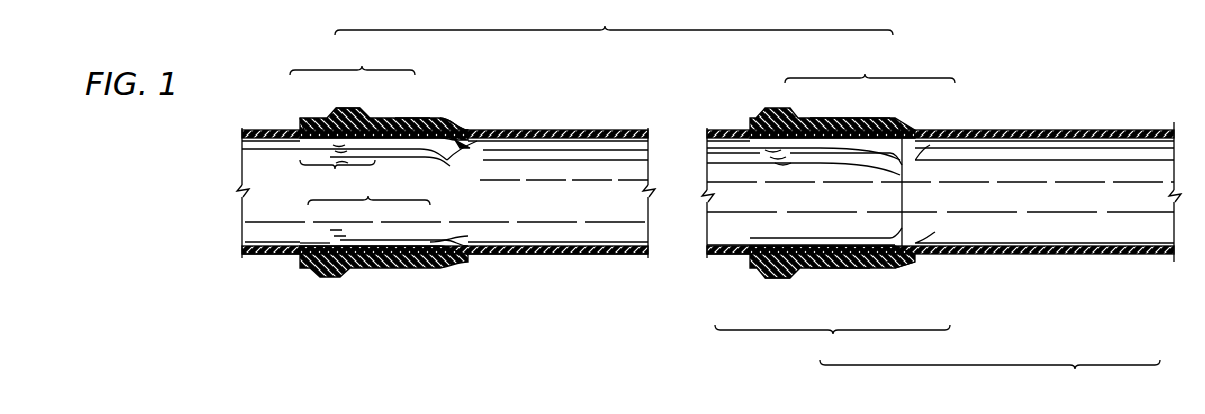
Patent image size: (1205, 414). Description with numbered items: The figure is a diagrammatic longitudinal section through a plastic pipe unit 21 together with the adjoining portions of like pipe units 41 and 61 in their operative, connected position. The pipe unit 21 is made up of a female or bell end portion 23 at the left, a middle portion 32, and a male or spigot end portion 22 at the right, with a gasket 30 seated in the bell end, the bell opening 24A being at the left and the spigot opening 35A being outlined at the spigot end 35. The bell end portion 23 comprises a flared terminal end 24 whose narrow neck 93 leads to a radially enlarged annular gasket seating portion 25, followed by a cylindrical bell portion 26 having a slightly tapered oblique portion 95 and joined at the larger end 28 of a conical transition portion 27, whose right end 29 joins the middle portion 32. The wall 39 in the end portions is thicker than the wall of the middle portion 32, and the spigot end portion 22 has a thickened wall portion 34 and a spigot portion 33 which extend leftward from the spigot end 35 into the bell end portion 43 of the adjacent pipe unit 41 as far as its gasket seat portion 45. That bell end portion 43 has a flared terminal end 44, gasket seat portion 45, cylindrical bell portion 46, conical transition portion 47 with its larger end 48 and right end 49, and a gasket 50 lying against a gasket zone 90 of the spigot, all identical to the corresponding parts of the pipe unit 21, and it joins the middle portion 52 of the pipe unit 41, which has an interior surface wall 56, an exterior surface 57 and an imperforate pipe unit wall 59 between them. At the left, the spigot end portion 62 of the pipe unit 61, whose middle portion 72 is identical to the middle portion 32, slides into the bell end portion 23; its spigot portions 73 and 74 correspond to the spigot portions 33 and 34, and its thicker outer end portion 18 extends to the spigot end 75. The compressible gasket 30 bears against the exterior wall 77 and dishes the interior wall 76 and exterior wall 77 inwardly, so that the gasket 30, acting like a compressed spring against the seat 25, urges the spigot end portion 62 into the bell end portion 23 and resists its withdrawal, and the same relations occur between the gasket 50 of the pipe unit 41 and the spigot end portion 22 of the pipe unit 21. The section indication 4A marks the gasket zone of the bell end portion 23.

The pipe unit 21 is at (614, 21).
The spigot end portion 22 is at (870, 69).
The bell end portion 23 is at (352, 61).
The flared terminal end 24 is at (305, 118).
The bell opening 24A is at (302, 262).
The gasket seating portion 25 is at (340, 110).
The cylindrical bell portion 26 is at (405, 118).
The conical transition portion 27 is at (468, 130).
The larger end of transition portion 28 is at (450, 125).
The right end of transition portion 29 is at (486, 129).
The gasket 30 is at (300, 157).
The middle portion 32 is at (606, 130).
The spigot portion 33 is at (778, 108).
The thickened wall portion 34 is at (855, 125).
The spigot end 35 is at (905, 136).
The spigot opening 35A is at (900, 191).
The wall 39 is at (556, 255).
The pipe unit 41 is at (940, 288).
The bell end portion 43 is at (832, 342).
The flared terminal end 44 is at (753, 264).
The gasket seat portion 45 is at (784, 276).
The cylindrical bell portion 46 is at (840, 266).
The conical transition portion 47 is at (908, 262).
The larger end of transition portion 48 is at (891, 266).
The right end of transition portion 49 is at (951, 256).
The gasket 50 is at (798, 132).
The middle portion 52 is at (1080, 256).
The interior surface wall 56 is at (1081, 141).
The exterior surface 57 is at (1105, 130).
The pipe unit wall 59 is at (1026, 130).
The pipe unit 61 is at (240, 161).
The spigot end portion 62 is at (340, 202).
The middle portion 72 is at (275, 256).
The spigot portion 73 is at (318, 248).
The spigot portion 74 is at (387, 245).
The spigot end 75 is at (446, 240).
The interior wall 76 is at (330, 157).
The exterior wall 77 is at (282, 130).
The groove 90 is at (776, 141).
The neck 93 is at (306, 122).
The oblique portion 95 is at (369, 126).
The section line 4A is at (337, 174).
The outer end portion 18 is at (408, 142).